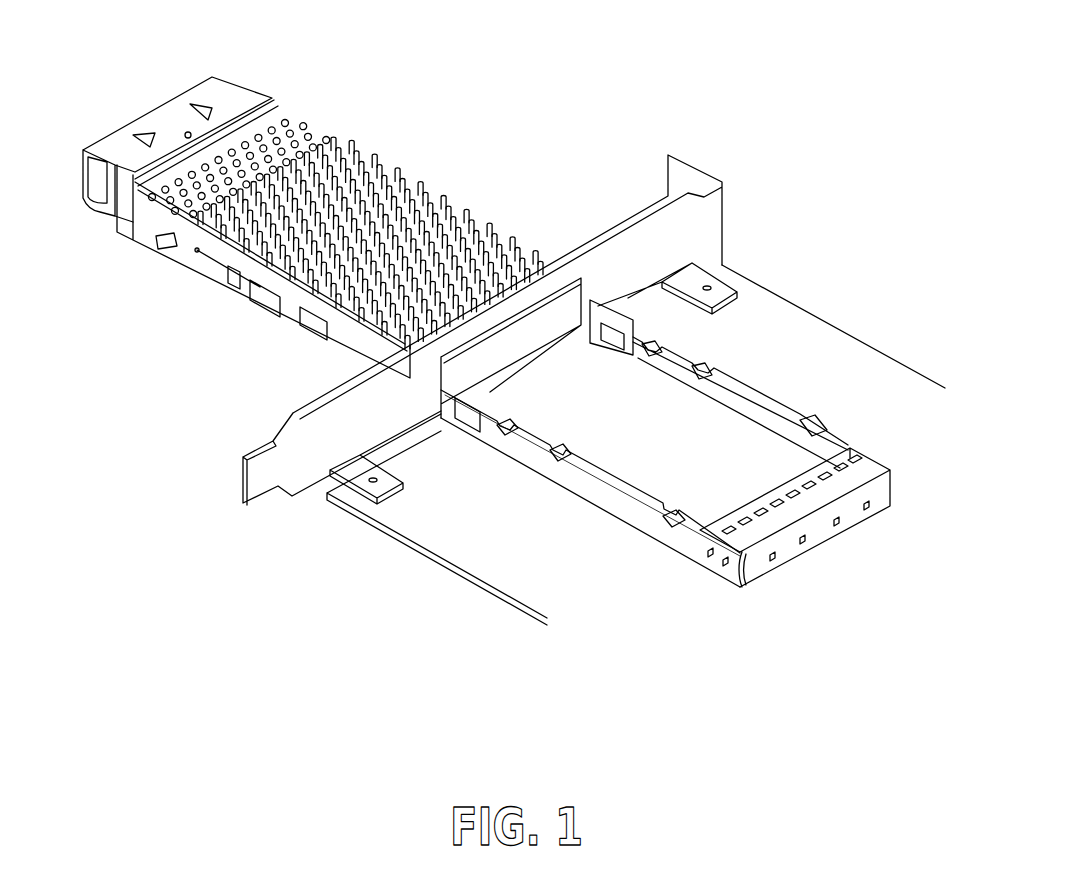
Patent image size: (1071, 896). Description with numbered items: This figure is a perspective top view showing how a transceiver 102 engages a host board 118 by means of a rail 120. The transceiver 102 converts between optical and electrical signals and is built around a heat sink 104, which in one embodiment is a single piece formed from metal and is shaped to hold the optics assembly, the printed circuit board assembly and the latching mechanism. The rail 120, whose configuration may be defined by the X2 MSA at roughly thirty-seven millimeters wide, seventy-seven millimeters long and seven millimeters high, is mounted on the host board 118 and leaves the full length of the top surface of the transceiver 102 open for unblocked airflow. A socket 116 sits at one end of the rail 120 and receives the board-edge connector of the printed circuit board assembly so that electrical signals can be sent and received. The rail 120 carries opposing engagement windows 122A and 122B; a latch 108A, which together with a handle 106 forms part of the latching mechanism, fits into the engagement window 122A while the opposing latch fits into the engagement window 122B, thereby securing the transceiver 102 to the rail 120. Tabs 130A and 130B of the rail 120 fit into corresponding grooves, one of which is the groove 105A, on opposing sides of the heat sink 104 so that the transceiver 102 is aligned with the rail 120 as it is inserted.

The transceiver 102 is at (294, 207).
The heat sink 104 is at (432, 200).
The groove 105A is at (323, 327).
The handle 106 is at (102, 126).
The latch 108A is at (167, 247).
The socket 116 is at (752, 587).
The host board 118 is at (843, 338).
The rail 120 is at (588, 477).
The engagement window 122A is at (459, 444).
The engagement window 122B is at (652, 323).
The tab 130A is at (512, 418).
The tab 130B is at (827, 407).